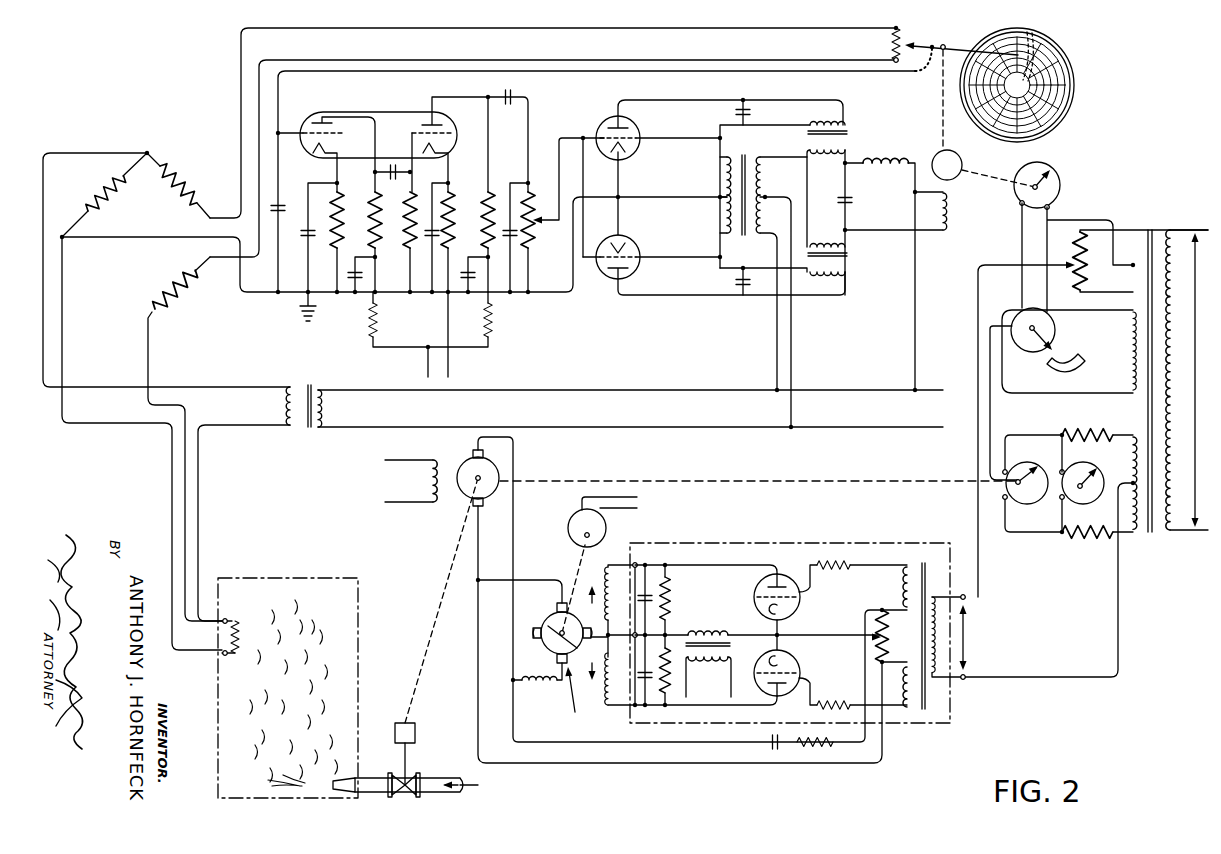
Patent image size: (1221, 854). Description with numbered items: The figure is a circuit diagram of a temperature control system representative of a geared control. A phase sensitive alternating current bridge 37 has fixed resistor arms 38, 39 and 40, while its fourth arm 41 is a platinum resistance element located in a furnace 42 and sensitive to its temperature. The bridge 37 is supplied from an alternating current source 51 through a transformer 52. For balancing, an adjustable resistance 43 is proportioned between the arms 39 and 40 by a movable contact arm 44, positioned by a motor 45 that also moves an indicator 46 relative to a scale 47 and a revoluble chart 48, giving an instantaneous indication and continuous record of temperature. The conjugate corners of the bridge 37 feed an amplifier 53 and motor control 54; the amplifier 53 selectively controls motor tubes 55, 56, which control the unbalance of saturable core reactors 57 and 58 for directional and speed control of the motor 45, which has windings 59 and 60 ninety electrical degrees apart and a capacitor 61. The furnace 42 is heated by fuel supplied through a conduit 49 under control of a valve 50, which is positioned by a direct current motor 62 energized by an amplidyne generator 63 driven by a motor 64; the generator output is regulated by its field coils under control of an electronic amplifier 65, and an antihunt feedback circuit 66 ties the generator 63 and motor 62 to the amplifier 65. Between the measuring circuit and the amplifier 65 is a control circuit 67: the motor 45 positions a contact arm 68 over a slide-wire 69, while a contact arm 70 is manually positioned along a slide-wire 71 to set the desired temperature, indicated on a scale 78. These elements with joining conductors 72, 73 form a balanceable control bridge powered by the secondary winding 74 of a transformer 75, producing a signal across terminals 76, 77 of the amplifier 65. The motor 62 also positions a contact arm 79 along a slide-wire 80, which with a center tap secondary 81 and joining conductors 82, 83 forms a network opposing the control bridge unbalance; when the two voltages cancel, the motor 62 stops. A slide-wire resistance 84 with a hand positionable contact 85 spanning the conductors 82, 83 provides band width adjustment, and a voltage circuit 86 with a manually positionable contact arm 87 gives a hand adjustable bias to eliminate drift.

The phase sensitive alternating current bridge 37 is at (152, 224).
The fixed resistor arm 38 is at (100, 193).
The fixed resistor arm 39 is at (184, 176).
The fixed resistor arm 40 is at (183, 294).
The fourth arm 41 is at (242, 637).
The furnace 42 is at (288, 677).
The adjustable resistance 43 is at (893, 44).
The movable contact arm 44 is at (932, 47).
The motor 45 is at (985, 159).
The indicator 46 is at (953, 50).
The scale 47 is at (1046, 46).
The revoluble chart 48 is at (1076, 85).
The conduit 49 is at (450, 791).
The valve 50 is at (439, 762).
The alternating current source 51 is at (643, 392).
The transformer 52 is at (304, 397).
The amplifier 53 is at (440, 236).
The motor control 54 is at (729, 252).
The motor tube 55 is at (606, 270).
The motor tube 56 is at (608, 120).
The saturable core reactor 57 is at (840, 259).
The saturable core reactor 58 is at (838, 208).
The motor winding 59 is at (893, 155).
The motor winding 60 is at (912, 211).
The capacitor 61 is at (849, 202).
The direct current motor 62 is at (449, 526).
The amplidyne generator 63 is at (545, 611).
The motor 64 is at (571, 527).
The electronic amplifier 65 is at (799, 623).
The antihunt feedback circuit 66 is at (615, 745).
The control circuit 67 is at (972, 342).
The contact arm 68 is at (1044, 176).
The slide-wire 69 is at (1061, 180).
The contact arm 70 is at (1056, 326).
The slide-wire 71 is at (1036, 354).
The joining conductor 72 is at (1022, 240).
The joining conductor 73 is at (1056, 209).
The secondary winding 74 is at (1131, 346).
The transformer 75 is at (1165, 556).
The terminal 76 is at (964, 587).
The terminal 77 is at (964, 686).
The scale 78 is at (1077, 368).
The contact arm 79 is at (780, 471).
The slide-wire 80 is at (1034, 512).
The center tap secondary 81 is at (1138, 437).
The joining conductor 82 is at (1048, 435).
The joining conductor 83 is at (1050, 533).
The slide-wire resistance 84 is at (1090, 468).
The hand positionable contact 85 is at (1086, 496).
The voltage circuit 86 is at (1130, 289).
The manually positionable contact arm 87 is at (1060, 270).